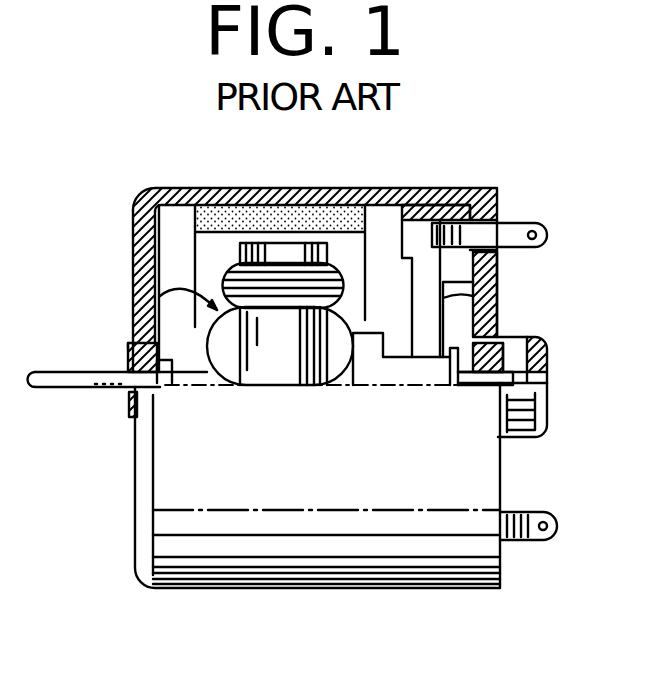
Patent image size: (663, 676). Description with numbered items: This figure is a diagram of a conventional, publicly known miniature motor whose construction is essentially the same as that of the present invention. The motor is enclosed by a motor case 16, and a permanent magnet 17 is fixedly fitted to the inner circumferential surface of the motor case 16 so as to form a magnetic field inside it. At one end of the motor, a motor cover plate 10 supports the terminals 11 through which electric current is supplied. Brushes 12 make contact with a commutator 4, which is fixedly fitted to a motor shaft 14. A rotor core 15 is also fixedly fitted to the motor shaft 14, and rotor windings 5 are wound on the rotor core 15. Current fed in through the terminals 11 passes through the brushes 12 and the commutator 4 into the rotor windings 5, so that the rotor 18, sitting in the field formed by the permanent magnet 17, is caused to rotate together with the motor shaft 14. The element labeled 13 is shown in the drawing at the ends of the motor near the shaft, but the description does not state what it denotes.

The commutator 4 is at (405, 370).
The rotor windings 5 is at (228, 270).
The motor cover plate 10 is at (503, 315).
The terminals 11 is at (517, 222).
The brushes 12 is at (498, 288).
The brackets 13 is at (128, 358).
The motor shaft 14 is at (102, 392).
The rotor core 15 is at (292, 253).
The motor case 16 is at (215, 189).
The permanent magnet 17 is at (291, 218).
The rotor 18 is at (136, 292).